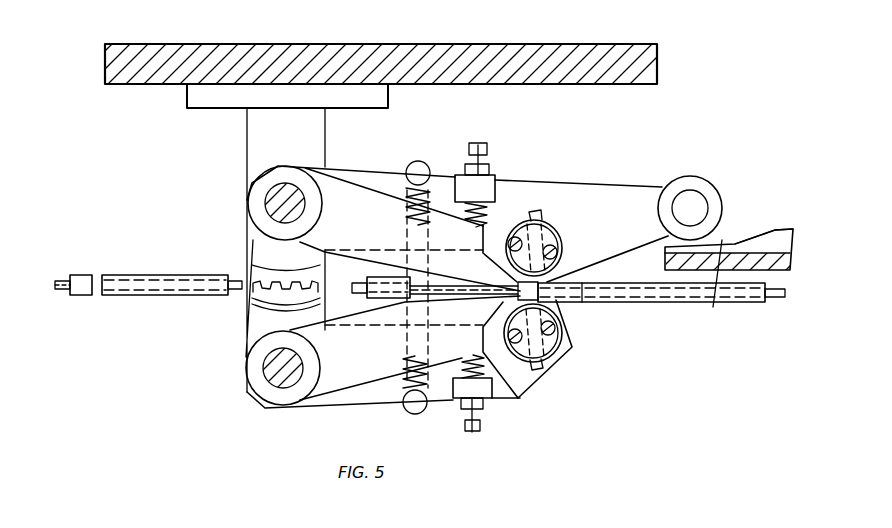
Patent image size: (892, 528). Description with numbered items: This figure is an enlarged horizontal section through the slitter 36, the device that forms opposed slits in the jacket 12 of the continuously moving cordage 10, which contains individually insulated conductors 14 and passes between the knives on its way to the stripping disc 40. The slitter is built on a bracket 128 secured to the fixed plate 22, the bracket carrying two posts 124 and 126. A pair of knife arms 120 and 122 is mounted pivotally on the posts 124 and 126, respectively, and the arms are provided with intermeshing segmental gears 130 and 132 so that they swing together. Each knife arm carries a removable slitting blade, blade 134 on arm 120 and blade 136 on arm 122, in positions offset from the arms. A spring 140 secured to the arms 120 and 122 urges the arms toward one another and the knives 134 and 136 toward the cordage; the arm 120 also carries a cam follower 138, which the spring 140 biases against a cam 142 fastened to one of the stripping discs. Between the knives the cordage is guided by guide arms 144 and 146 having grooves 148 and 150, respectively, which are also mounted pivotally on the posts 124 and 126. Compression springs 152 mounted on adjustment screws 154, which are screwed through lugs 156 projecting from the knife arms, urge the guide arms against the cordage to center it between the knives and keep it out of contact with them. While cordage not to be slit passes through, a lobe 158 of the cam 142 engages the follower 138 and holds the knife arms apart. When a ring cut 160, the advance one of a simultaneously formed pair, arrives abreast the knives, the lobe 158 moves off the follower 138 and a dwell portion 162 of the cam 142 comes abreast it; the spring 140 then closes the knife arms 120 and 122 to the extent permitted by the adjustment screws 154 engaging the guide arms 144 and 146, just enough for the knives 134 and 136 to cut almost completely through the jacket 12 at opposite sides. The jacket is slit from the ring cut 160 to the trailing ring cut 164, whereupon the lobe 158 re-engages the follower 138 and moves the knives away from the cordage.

The fixed plate 22 is at (218, 47).
The bracket 128 is at (247, 142).
The post 124 is at (265, 203).
The post 126 is at (263, 368).
The knife arm 120 is at (372, 172).
The knife arm 122 is at (366, 406).
The segmental gear 130 is at (258, 272).
The segmental gear 132 is at (256, 300).
The groove 148 is at (472, 278).
The groove 150 is at (475, 302).
The spring 140 is at (405, 212).
The lug 156 is at (490, 182).
The adjustment screw 154 is at (480, 143).
The compression spring 152 is at (466, 210).
The guide arm 144 is at (490, 228).
The guide arm 146 is at (482, 348).
The slitting blade 134 is at (546, 220).
The slitting blade 136 is at (550, 370).
The cam follower 138 is at (700, 184).
The stripping disc 40 is at (672, 268).
The cam 142 is at (742, 243).
The lobe 158 is at (772, 238).
The ring cut 160 is at (590, 298).
The dwell portion 162 is at (710, 285).
The individually insulated conductor 14 is at (64, 286).
The cordage 10 is at (138, 297).
The jacket 12 is at (122, 275).
The ring cut 164 is at (82, 275).
The slitter 36 is at (587, 399).